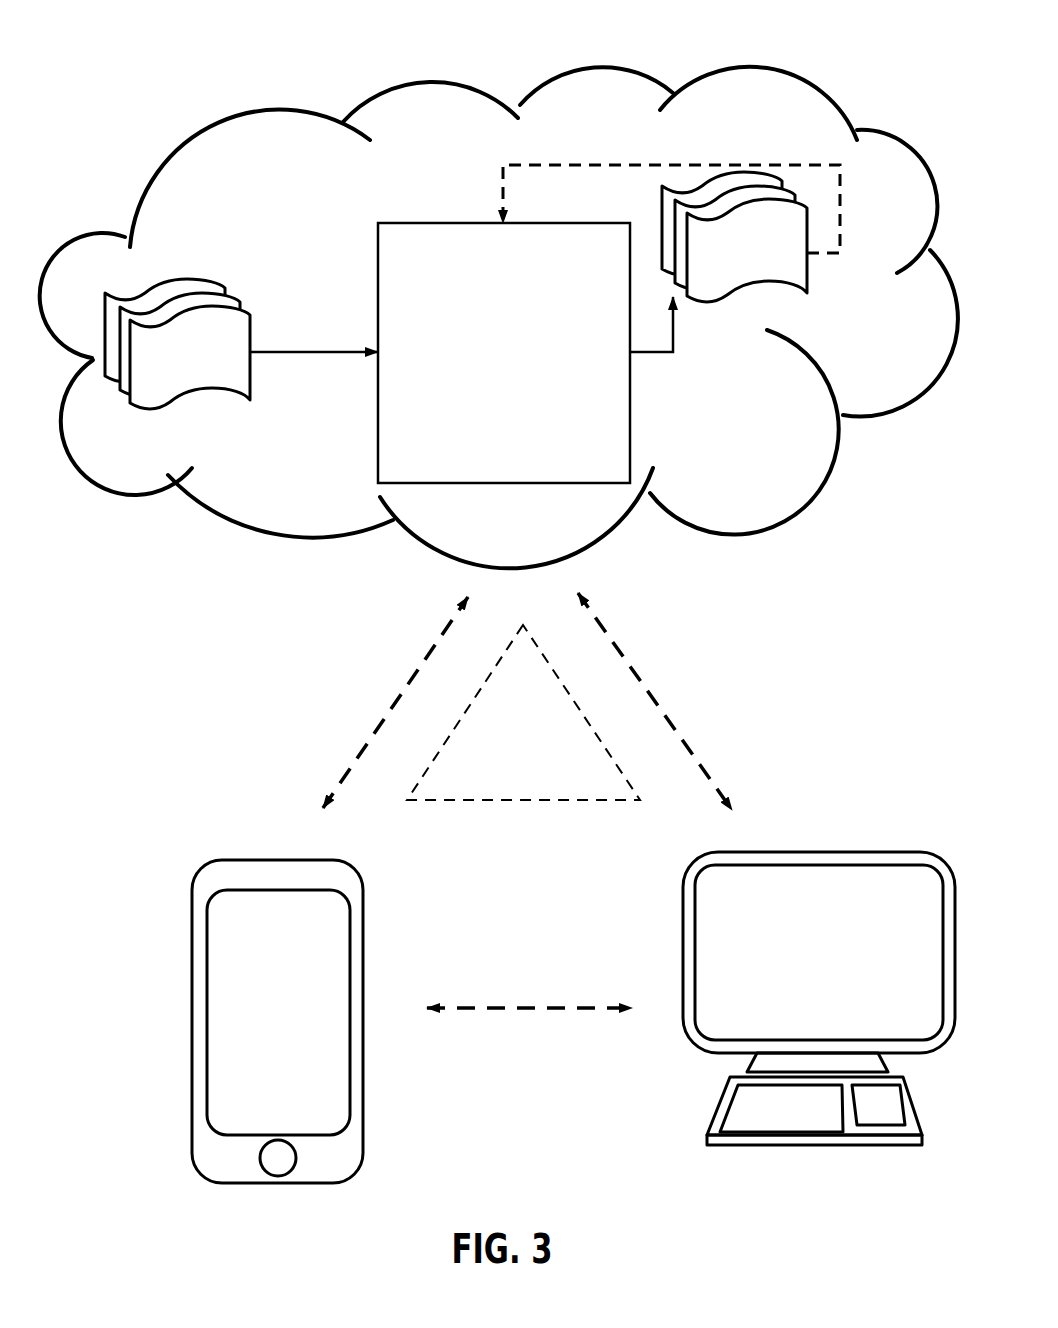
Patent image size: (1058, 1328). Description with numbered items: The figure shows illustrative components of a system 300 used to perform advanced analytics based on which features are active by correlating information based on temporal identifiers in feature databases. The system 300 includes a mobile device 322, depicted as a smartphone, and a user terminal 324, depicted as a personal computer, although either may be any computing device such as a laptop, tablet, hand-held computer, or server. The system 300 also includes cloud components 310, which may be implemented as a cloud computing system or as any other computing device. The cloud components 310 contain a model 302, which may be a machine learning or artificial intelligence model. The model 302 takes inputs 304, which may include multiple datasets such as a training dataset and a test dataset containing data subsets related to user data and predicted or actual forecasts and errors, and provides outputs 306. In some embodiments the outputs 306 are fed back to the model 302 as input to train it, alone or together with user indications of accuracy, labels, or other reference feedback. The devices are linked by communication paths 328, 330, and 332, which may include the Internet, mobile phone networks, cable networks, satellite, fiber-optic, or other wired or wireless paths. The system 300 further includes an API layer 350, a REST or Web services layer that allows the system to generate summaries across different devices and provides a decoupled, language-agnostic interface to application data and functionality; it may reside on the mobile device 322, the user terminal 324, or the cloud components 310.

The system 300 is at (482, 59).
The model 302 is at (484, 363).
The inputs 304 is at (198, 283).
The outputs 306 is at (783, 282).
The cloud components 310 is at (803, 128).
The mobile device 322 is at (268, 837).
The user terminal 324 is at (813, 847).
The communication path 328 is at (348, 690).
The communication path 330 is at (733, 658).
The communication path 332 is at (518, 980).
The API layer 350 is at (506, 738).